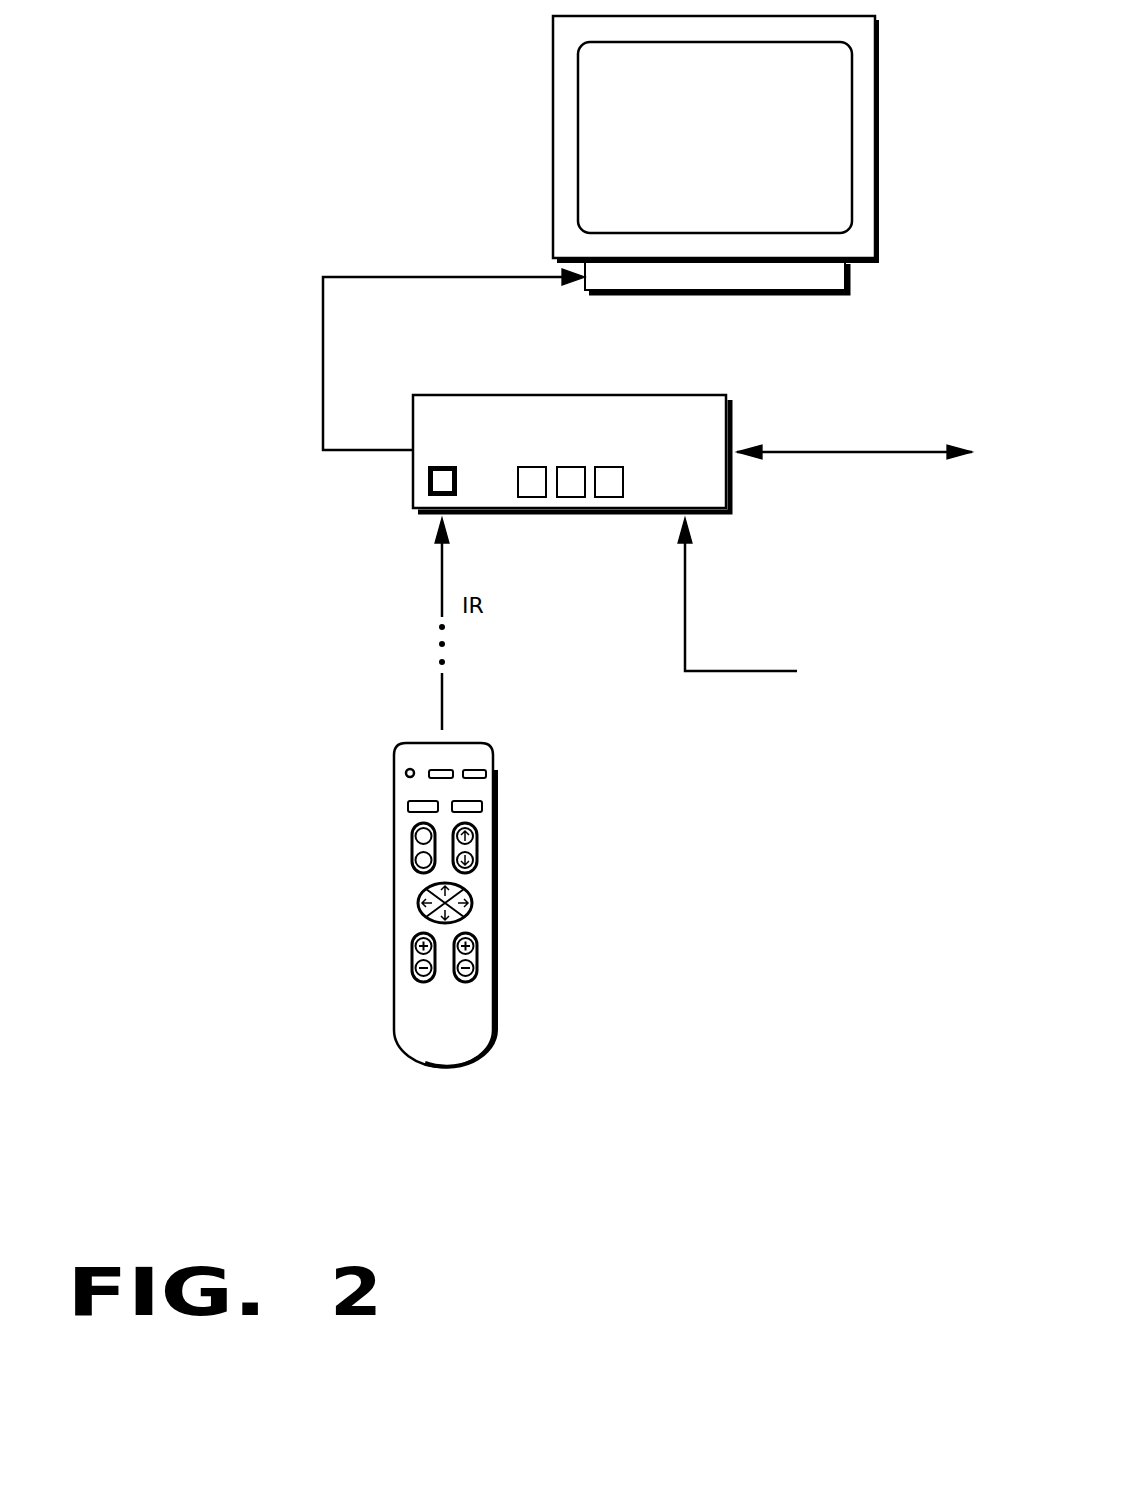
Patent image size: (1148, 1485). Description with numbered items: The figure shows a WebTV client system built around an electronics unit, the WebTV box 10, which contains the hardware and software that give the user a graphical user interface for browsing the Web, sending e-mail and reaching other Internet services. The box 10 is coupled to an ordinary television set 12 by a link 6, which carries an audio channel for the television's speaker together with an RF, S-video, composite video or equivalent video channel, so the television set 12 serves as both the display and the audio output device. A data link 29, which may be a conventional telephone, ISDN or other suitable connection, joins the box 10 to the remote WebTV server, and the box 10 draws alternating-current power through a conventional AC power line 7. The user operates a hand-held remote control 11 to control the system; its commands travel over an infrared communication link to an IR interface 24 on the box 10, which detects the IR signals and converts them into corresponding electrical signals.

The link 6 is at (321, 360).
The AC power line 7 is at (758, 673).
The WebTV box 10 is at (713, 496).
The remote control 11 is at (458, 1041).
The television set 12 is at (832, 218).
The IR interface 24 is at (457, 485).
The data link 29 is at (792, 452).